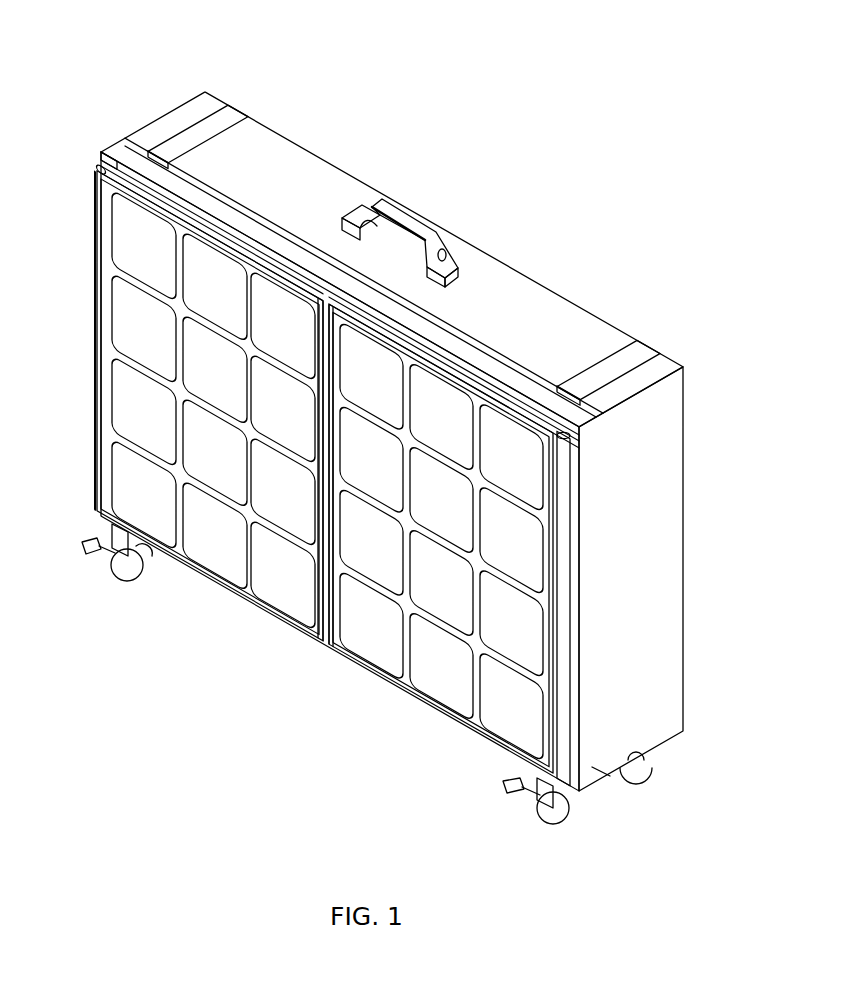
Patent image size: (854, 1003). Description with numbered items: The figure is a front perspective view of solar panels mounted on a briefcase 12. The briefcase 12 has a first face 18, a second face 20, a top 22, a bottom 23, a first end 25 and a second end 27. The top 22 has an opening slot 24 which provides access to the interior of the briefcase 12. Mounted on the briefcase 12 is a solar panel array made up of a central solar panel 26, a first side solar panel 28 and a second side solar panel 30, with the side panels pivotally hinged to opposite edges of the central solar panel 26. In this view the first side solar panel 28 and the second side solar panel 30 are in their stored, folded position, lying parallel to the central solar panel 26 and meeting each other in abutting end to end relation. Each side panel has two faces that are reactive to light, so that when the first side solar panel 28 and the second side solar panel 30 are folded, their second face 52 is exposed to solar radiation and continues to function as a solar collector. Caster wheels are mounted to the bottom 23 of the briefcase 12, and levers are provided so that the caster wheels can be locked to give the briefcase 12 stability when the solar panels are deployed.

The briefcase 12 is at (401, 460).
The first face 18 is at (564, 613).
The second face 20 is at (428, 181).
The top 22 is at (584, 328).
The bottom 23 is at (627, 802).
The opening slot 24 is at (106, 132).
The first end 25 is at (670, 654).
The central solar panel 26 is at (327, 279).
The second end 27 is at (123, 74).
The first side solar panel 28 is at (463, 368).
The second side solar panel 30 is at (210, 220).
The second face 52 is at (220, 482).